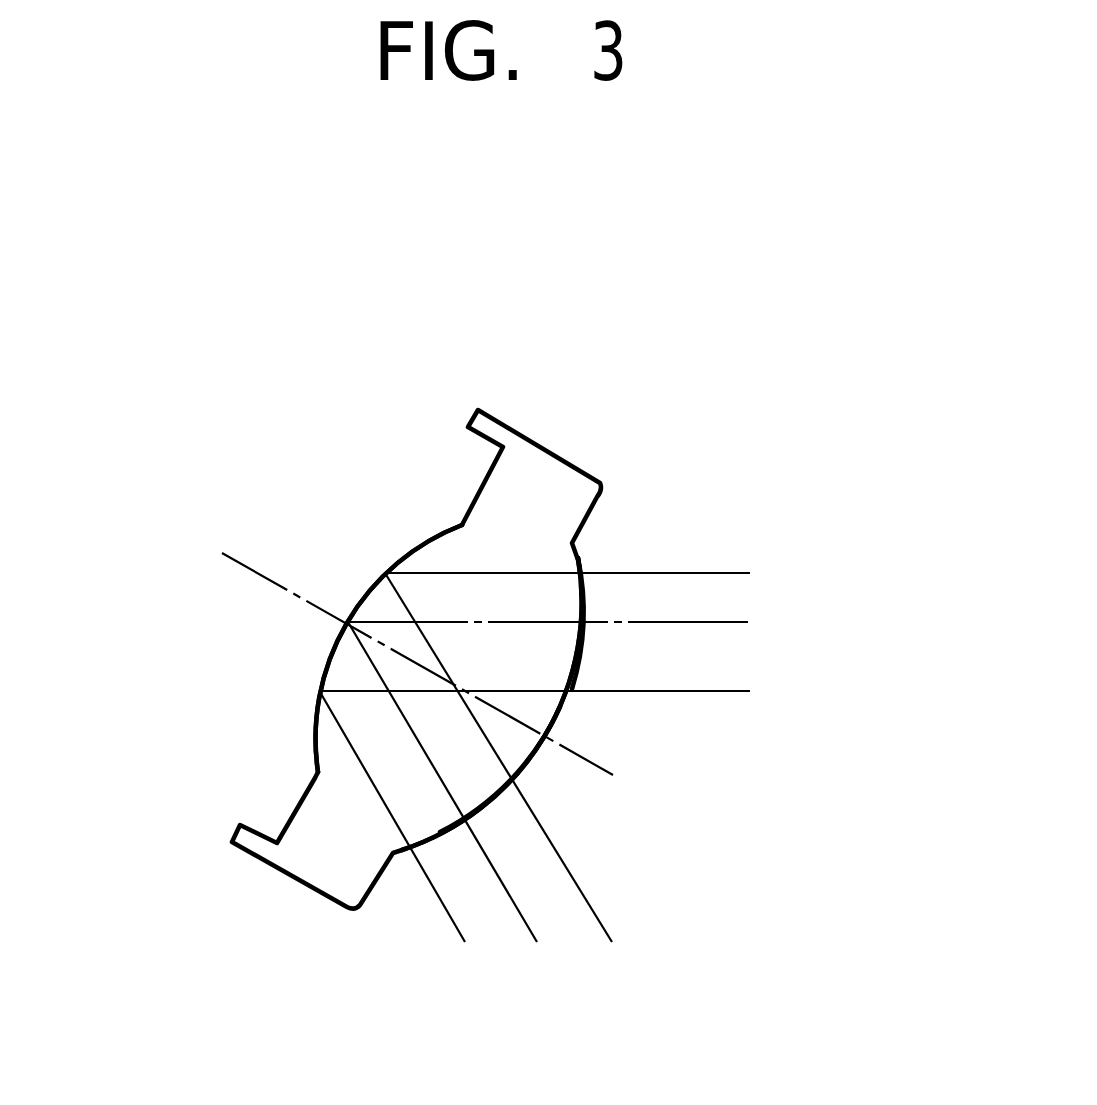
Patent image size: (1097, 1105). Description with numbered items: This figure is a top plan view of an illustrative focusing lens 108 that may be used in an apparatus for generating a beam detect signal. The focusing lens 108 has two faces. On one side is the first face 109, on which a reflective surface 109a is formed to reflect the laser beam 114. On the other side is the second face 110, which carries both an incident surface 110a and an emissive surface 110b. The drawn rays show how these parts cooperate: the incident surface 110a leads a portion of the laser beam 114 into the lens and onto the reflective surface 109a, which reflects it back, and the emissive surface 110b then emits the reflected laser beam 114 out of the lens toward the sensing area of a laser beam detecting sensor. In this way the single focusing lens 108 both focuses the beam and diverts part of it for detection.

The focusing lens 108 is at (505, 407).
The first face 109 is at (367, 575).
The reflective surface 109a is at (330, 653).
The second face 110 is at (487, 810).
The incident surface 110a is at (530, 762).
The emissive surface 110b is at (578, 558).
The laser beam 114 is at (595, 910).